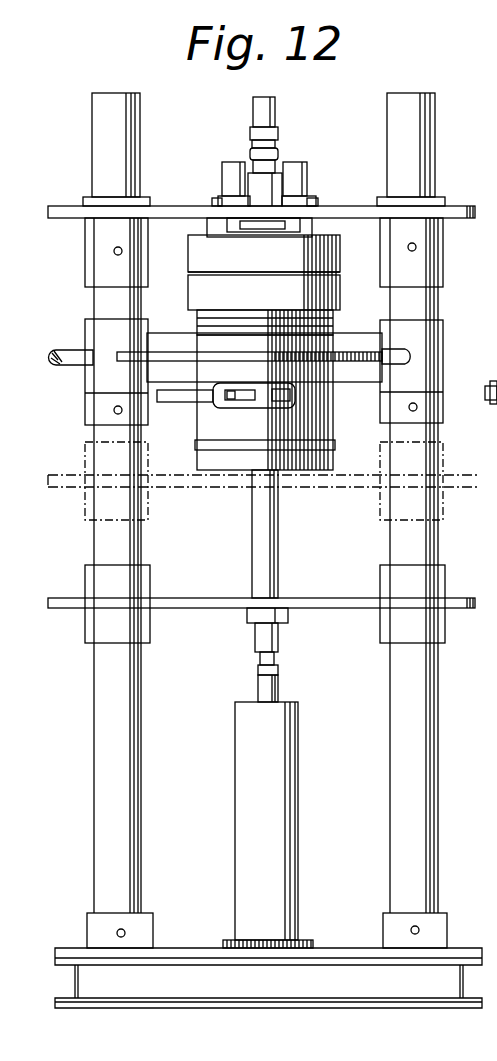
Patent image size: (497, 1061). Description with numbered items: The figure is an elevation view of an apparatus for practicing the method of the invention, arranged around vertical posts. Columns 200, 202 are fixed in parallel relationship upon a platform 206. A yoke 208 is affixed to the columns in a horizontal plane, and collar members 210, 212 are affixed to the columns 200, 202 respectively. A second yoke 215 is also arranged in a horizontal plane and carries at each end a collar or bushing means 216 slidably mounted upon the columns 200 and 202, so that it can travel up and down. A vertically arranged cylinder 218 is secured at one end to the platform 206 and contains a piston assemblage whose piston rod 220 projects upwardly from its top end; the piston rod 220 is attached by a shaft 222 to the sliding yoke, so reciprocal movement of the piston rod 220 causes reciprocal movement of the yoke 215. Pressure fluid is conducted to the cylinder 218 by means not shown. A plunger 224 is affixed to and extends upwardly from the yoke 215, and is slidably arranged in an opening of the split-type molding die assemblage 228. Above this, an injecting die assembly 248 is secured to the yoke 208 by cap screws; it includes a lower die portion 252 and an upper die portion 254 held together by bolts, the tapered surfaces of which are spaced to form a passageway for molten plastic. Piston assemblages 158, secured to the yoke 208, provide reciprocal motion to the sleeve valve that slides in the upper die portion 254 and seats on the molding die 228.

The piston assemblages 158 is at (232, 162).
The column 200 is at (143, 797).
The column 202 is at (440, 823).
The platform 206 is at (170, 948).
The yoke 208 is at (178, 205).
The collar member 210 is at (149, 417).
The collar member 212 is at (440, 416).
The yoke 215 is at (198, 598).
The collar or bushing means 216 is at (152, 568).
The cylinder 218 is at (298, 843).
The piston rod 220 is at (280, 688).
The shaft 222 is at (290, 635).
The plunger 224 is at (282, 585).
The molding die assemblage 228 is at (326, 417).
The injecting die assembly 248 is at (285, 270).
The lower die portion 252 is at (252, 305).
The upper die portion 254 is at (252, 267).